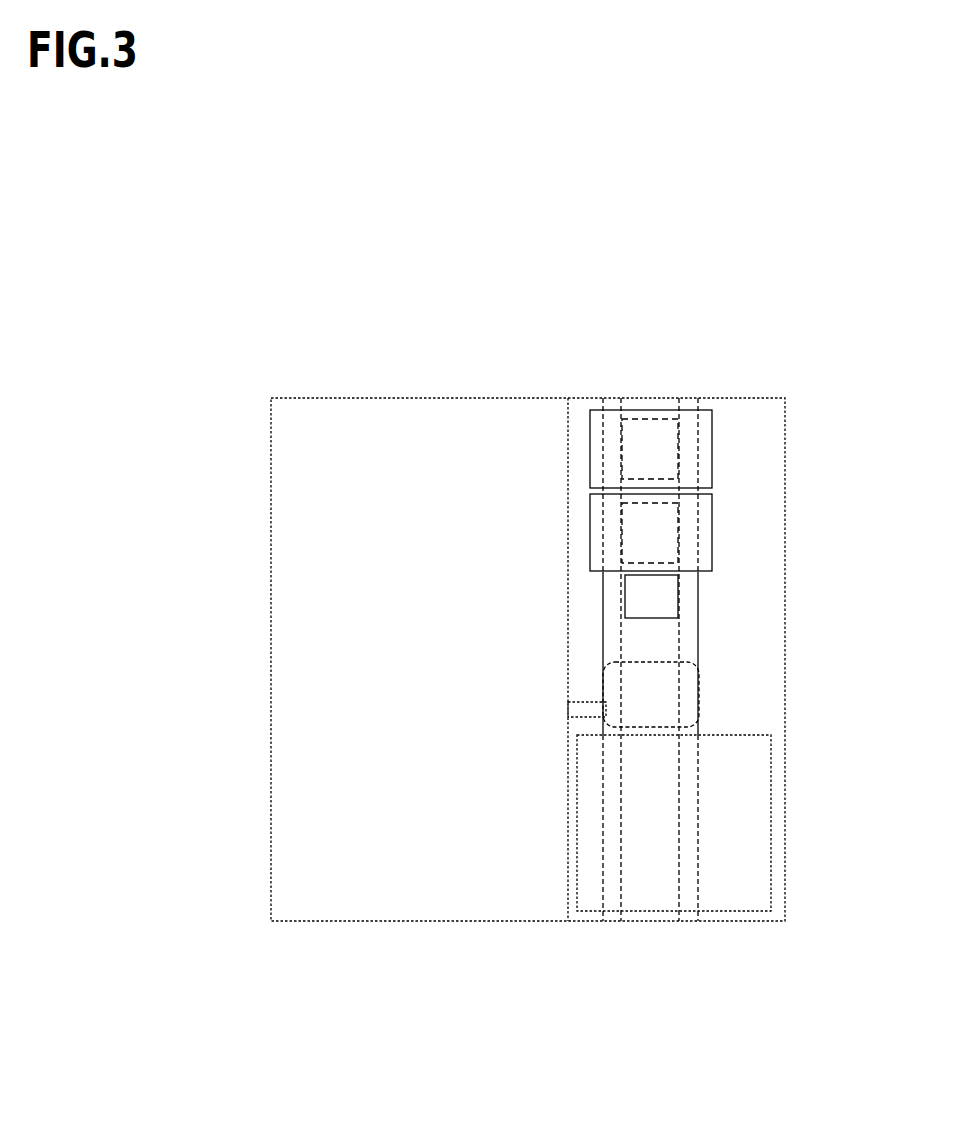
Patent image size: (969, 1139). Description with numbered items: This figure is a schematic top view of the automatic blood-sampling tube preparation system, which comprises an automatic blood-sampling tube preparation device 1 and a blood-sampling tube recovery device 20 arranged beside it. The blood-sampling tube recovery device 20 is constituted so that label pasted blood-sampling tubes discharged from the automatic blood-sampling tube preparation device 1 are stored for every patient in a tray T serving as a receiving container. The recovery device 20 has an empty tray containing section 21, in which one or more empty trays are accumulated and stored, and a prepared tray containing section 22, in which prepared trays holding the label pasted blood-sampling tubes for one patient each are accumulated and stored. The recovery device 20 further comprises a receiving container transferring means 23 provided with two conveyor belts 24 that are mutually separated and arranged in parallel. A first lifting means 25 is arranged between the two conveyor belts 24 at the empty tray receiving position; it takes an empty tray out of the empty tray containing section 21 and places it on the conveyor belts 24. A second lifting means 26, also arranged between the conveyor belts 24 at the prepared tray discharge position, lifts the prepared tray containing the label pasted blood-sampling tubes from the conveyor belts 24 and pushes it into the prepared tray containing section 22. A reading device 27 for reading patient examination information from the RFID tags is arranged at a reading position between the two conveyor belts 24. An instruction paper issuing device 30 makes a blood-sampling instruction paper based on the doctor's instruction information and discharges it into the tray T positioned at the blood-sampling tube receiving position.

The automatic blood-sampling tube preparation device 1 is at (420, 921).
The blood-sampling tube recovery device 20 is at (758, 921).
The empty tray containing section 21 is at (710, 513).
The prepared tray containing section 22 is at (708, 430).
The receiving container transferring means 23 is at (686, 619).
The conveyor belts 24 is at (608, 643).
The first lifting means 25 is at (640, 540).
The second lifting means 26 is at (652, 433).
The reading device 27 is at (630, 600).
The instruction paper issuing device 30 is at (758, 817).
The tray T is at (668, 697).